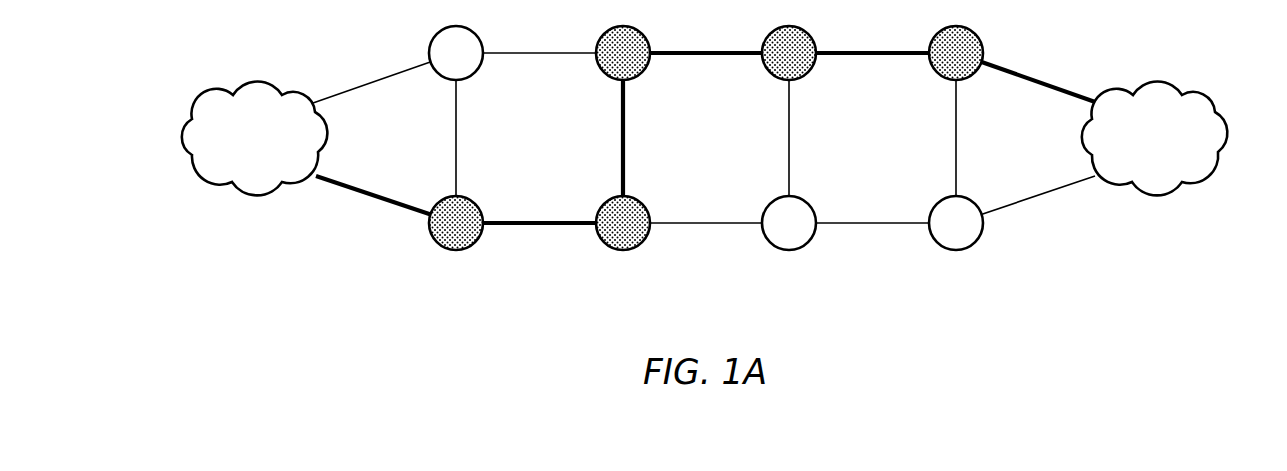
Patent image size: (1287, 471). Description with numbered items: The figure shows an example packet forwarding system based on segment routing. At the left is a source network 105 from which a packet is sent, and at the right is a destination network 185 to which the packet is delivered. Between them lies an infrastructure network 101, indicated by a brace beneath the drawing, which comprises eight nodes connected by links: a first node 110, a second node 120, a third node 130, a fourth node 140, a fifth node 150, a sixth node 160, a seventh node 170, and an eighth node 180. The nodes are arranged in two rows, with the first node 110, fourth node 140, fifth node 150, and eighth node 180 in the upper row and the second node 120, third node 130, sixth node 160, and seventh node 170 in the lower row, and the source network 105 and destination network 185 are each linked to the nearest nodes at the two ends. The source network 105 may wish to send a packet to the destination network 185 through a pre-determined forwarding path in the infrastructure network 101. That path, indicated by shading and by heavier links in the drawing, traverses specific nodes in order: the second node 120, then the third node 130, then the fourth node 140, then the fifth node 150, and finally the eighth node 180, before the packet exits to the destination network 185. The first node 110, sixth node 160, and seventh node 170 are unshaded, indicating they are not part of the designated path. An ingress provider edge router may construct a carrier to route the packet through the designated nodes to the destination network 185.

The infrastructure network 101 is at (423, 273).
The source network 105 is at (263, 189).
The Node 1 110 is at (476, 34).
The Node 2 120 is at (475, 246).
The Node 3 130 is at (642, 246).
The Node 4 140 is at (643, 34).
The Node 5 150 is at (809, 34).
The Node 6 160 is at (808, 246).
The Node 7 170 is at (975, 246).
The Node 8 180 is at (976, 34).
The destination network 185 is at (1148, 189).